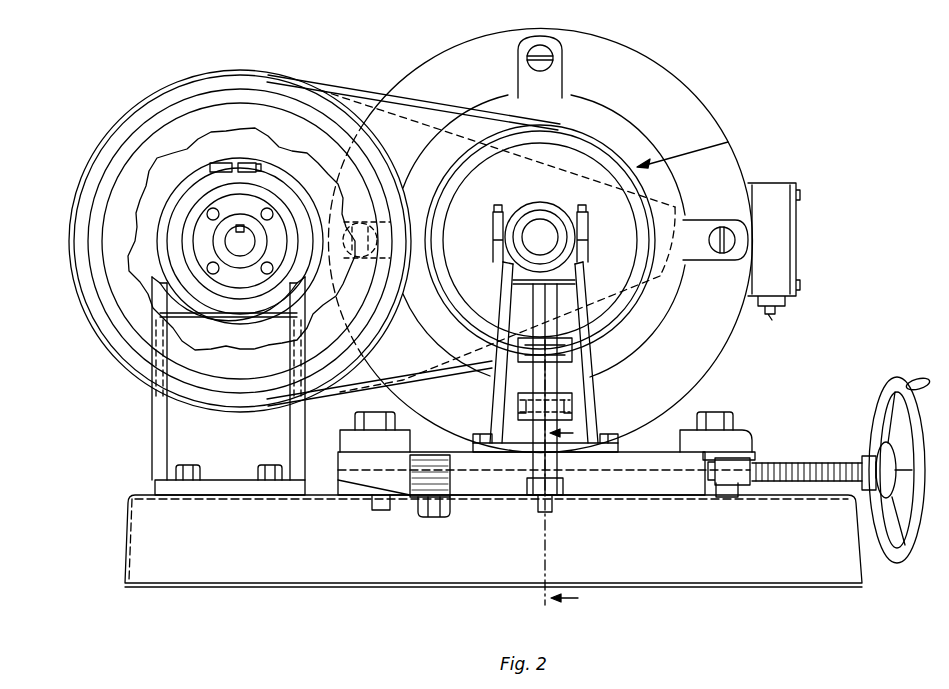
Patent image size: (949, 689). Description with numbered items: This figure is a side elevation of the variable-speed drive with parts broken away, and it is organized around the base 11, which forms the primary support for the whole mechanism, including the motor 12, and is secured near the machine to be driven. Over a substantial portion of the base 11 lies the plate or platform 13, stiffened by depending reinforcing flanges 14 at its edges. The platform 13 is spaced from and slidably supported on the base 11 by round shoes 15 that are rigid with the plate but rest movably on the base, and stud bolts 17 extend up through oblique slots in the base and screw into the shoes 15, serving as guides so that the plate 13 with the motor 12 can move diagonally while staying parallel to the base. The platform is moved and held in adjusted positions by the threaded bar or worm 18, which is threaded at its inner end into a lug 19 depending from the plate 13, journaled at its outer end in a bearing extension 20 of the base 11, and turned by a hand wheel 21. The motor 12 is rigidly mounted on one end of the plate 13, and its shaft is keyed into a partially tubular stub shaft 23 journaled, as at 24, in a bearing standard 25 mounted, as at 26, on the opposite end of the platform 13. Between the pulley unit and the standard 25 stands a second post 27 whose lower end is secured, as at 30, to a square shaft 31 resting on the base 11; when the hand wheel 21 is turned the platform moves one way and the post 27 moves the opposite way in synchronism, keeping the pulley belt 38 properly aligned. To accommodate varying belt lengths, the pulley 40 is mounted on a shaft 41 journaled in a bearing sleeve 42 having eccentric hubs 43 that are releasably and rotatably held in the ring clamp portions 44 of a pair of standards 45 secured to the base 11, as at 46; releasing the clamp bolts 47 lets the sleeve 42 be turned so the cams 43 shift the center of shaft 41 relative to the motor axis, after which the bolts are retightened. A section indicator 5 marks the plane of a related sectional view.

The base 11 is at (323, 570).
The motor 12 is at (657, 92).
The plate or platform 13 is at (739, 450).
The reinforcing flanges 14 is at (620, 492).
The shoes or lugs 15 is at (378, 497).
The stud bolts 17 is at (433, 518).
The threaded bar or worm 18 is at (788, 460).
The lug 19 is at (738, 480).
The bearing extension 20 is at (868, 458).
The hand wheel 21 is at (890, 382).
The stub shaft 23 is at (540, 236).
The journal bearing 24 is at (523, 218).
The bearing standard 25 is at (565, 400).
The mounting of bearing standard 26 is at (613, 430).
The second standard or post 27 is at (560, 372).
The securing means of post to square shaft 30 is at (530, 480).
The square shaft 31 is at (541, 494).
The pulley belt 38 is at (365, 92).
The pulley 40 is at (247, 83).
The shaft 41 is at (240, 245).
The bearing sleeve 42 is at (210, 223).
The eccentric hubs or collars 43 is at (190, 265).
The ring clamp portions 44 is at (162, 209).
The standards 45 is at (153, 438).
The securing means of standards 46 is at (258, 465).
The clamp bolts 47 is at (262, 167).
The section line 5 is at (559, 482).